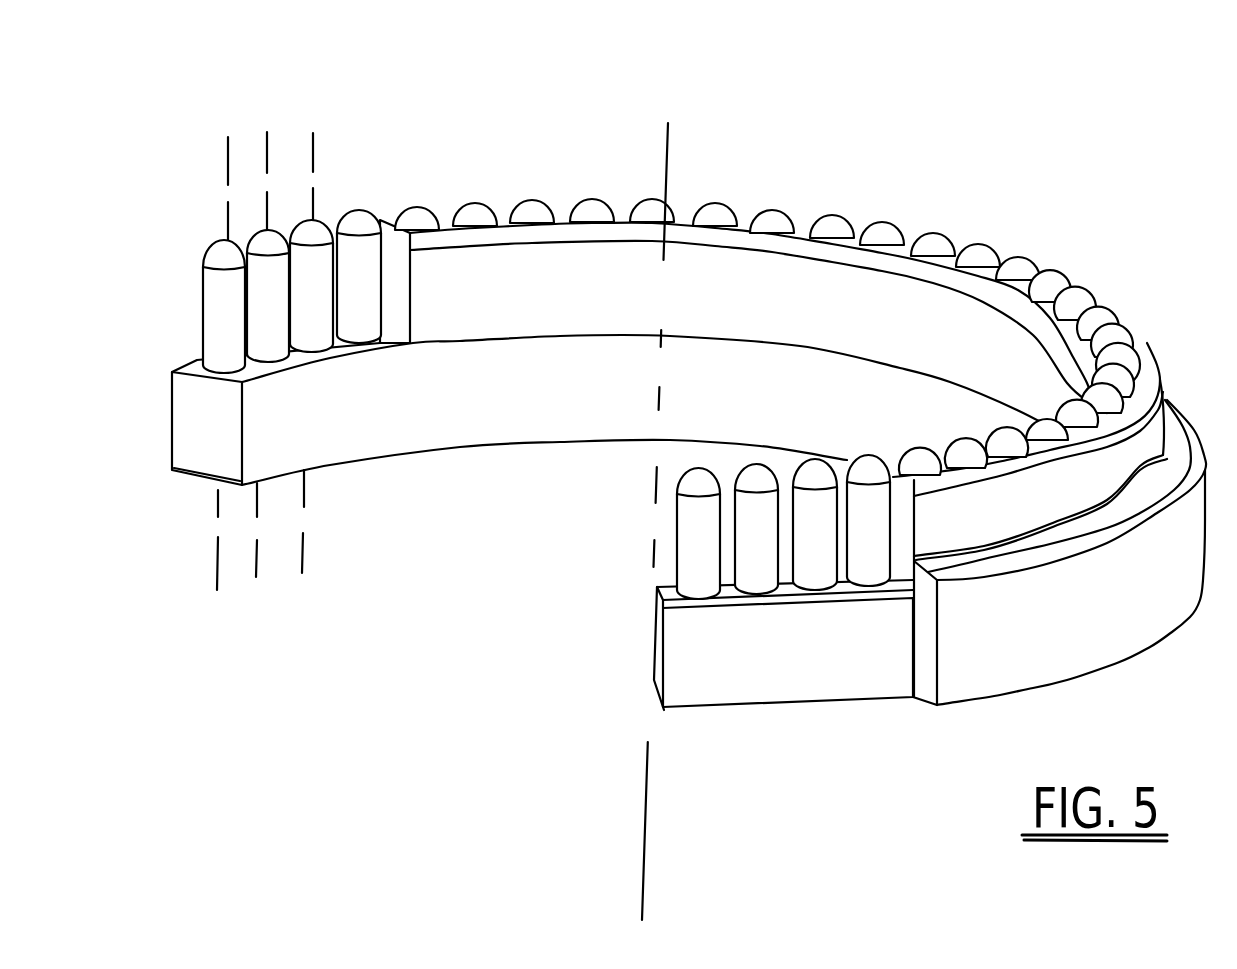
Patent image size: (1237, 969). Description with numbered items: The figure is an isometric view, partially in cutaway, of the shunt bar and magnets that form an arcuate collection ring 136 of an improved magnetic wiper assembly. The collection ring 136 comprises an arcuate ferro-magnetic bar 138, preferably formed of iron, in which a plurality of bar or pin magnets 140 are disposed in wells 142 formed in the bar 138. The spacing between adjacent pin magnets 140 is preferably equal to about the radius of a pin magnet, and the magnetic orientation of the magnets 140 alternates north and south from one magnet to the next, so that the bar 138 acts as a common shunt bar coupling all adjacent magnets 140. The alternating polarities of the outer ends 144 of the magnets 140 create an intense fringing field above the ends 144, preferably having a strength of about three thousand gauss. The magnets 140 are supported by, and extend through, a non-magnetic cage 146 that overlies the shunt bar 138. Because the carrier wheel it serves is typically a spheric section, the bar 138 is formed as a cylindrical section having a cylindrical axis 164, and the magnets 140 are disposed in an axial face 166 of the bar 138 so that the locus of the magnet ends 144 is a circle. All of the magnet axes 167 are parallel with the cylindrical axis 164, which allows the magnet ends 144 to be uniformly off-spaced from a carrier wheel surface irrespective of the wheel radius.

The arcuate collection ring 136 is at (694, 452).
The arcuate ferro-magnetic bar 138 is at (723, 570).
The pin magnets 140 is at (721, 525).
The wells 142 is at (822, 625).
The outer ends of magnets 144 is at (806, 458).
The non-magnetic cage 146 is at (1088, 645).
The cylindrical axis 164 is at (667, 175).
The axial face 166 is at (657, 590).
The magnet axes 167 is at (308, 150).